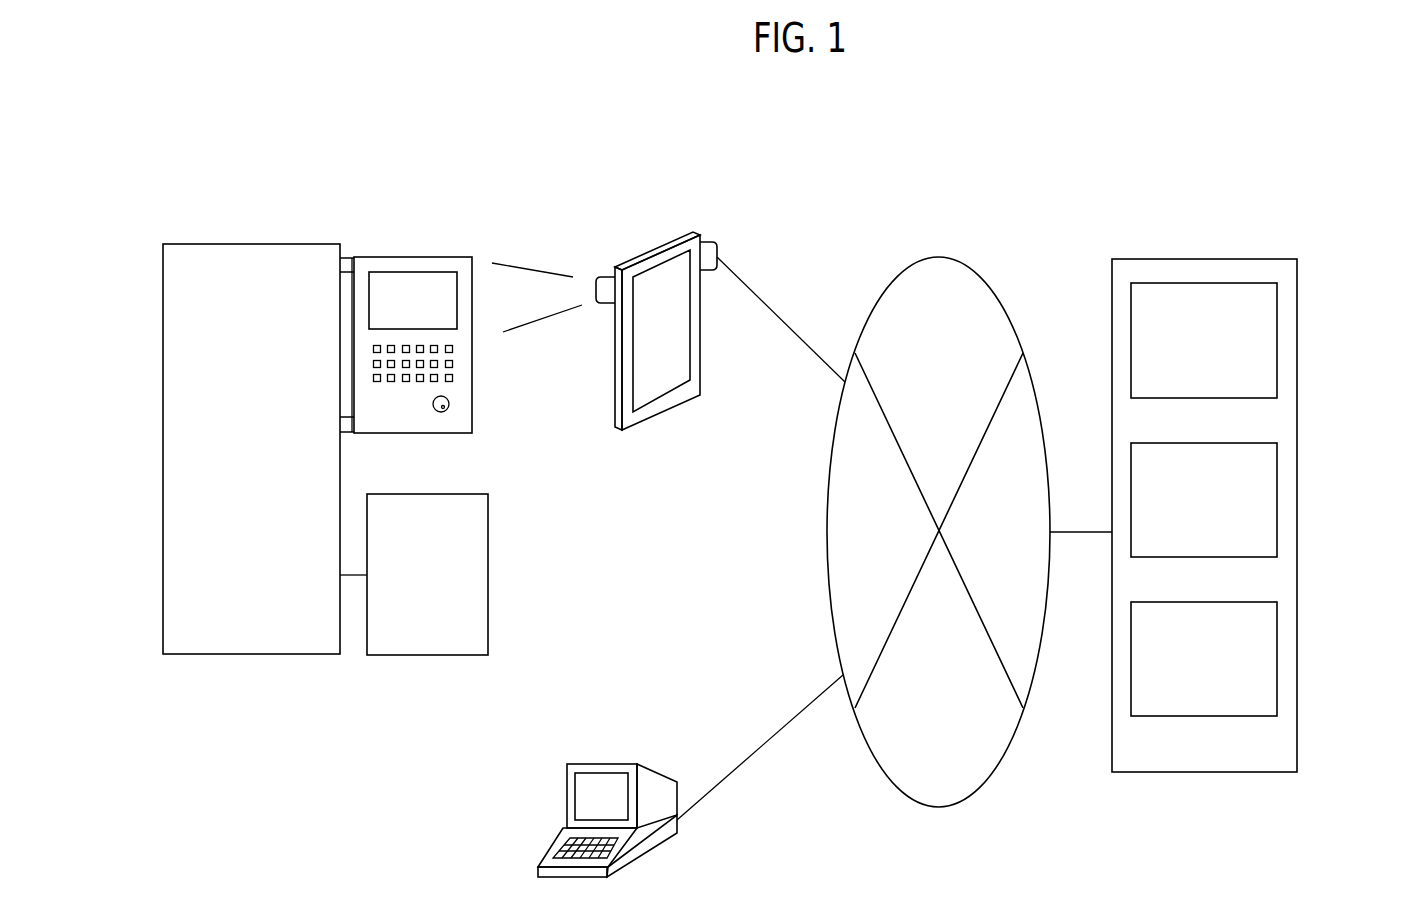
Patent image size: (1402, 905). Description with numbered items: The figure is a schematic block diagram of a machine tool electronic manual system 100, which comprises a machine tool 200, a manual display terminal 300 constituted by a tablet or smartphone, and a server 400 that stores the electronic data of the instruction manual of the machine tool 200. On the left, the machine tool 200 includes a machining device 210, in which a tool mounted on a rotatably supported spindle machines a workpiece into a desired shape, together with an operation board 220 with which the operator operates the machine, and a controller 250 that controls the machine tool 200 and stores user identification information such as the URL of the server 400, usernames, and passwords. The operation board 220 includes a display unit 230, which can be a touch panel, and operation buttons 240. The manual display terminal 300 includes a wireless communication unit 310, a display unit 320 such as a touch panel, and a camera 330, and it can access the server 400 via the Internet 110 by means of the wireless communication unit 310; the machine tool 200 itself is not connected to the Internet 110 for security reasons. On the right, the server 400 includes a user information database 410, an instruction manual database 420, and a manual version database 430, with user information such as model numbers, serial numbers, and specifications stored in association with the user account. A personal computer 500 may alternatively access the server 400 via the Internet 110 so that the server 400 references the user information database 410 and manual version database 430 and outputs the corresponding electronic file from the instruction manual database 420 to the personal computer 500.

The machine tool electronic manual system 100 is at (1070, 185).
The Internet 110 is at (920, 262).
The machine tool 200 is at (447, 182).
The machining device 210 is at (242, 244).
The operation board 220 is at (447, 257).
The display unit 230 is at (396, 272).
The operation buttons 240 is at (456, 367).
The controller 250 is at (408, 656).
The manual display terminal 300 is at (700, 190).
The wireless communication unit 310 is at (713, 242).
The display unit 320 is at (662, 348).
The camera 330 is at (605, 278).
The server 400 is at (1213, 259).
The user information database 410 is at (1278, 342).
The instruction manual database 420 is at (1278, 494).
The manual version database 430 is at (1278, 650).
The personal computer 500 is at (610, 757).